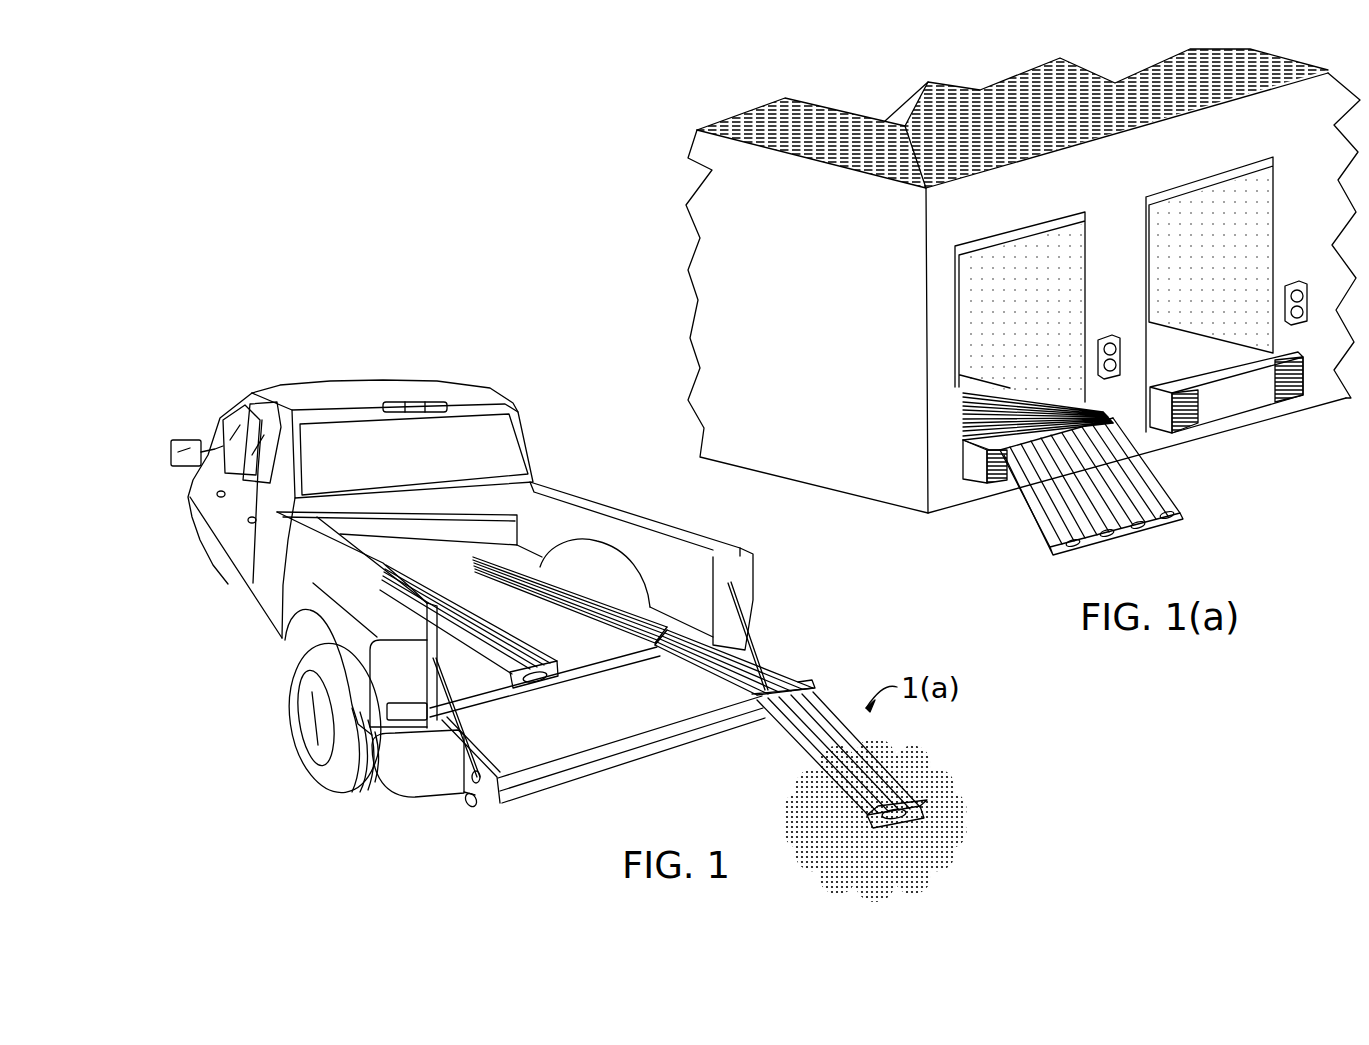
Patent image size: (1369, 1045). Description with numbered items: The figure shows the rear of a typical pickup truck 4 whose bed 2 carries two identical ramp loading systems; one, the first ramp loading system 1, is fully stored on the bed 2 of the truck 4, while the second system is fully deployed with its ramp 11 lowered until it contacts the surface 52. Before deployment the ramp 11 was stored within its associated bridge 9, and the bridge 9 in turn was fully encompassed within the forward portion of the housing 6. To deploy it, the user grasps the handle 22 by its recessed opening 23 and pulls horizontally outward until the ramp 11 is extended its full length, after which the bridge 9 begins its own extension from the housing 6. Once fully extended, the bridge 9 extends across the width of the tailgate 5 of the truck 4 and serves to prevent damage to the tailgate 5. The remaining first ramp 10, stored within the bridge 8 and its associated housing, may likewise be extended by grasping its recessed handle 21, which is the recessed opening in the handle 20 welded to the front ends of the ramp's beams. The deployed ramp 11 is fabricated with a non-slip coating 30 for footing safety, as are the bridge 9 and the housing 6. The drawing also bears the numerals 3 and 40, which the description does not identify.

In FIG. 1, the first ramp loading system 1 is at (430, 583).
In FIG. 1, the bed 2 is at (582, 653).
In FIG. 1, the bed side wall 3 is at (642, 553).
In FIG. 1, the pickup truck 4 is at (530, 482).
In FIG. 1, the tailgate 5 is at (531, 755).
In FIG. 1, the housing 6 is at (700, 577).
In FIG. 1, the bridge 8 is at (512, 640).
In FIG. 1, the bridge 9 is at (707, 685).
In FIG. 1a, the first ramp 10 is at (1015, 473).
In FIG. 1, the ramp 11 is at (827, 707).
In FIG. 1a, the ramp 11 is at (1133, 445).
In FIG. 1, the handle 20 is at (532, 678).
In FIG. 1, the recessed opening 21 is at (537, 681).
In FIG. 1a, the recessed opening 21 is at (1078, 548).
In FIG. 1, the handle 22 is at (872, 818).
In FIG. 1, the recessed opening 23 is at (894, 818).
In FIG. 1a, the recessed opening 23 is at (1168, 516).
In FIG. 1, the non-slip coating 30 is at (852, 743).
In FIG. 1a, the dock bumper block 40 is at (978, 465).
In FIG. 1, the surface 52 is at (927, 838).